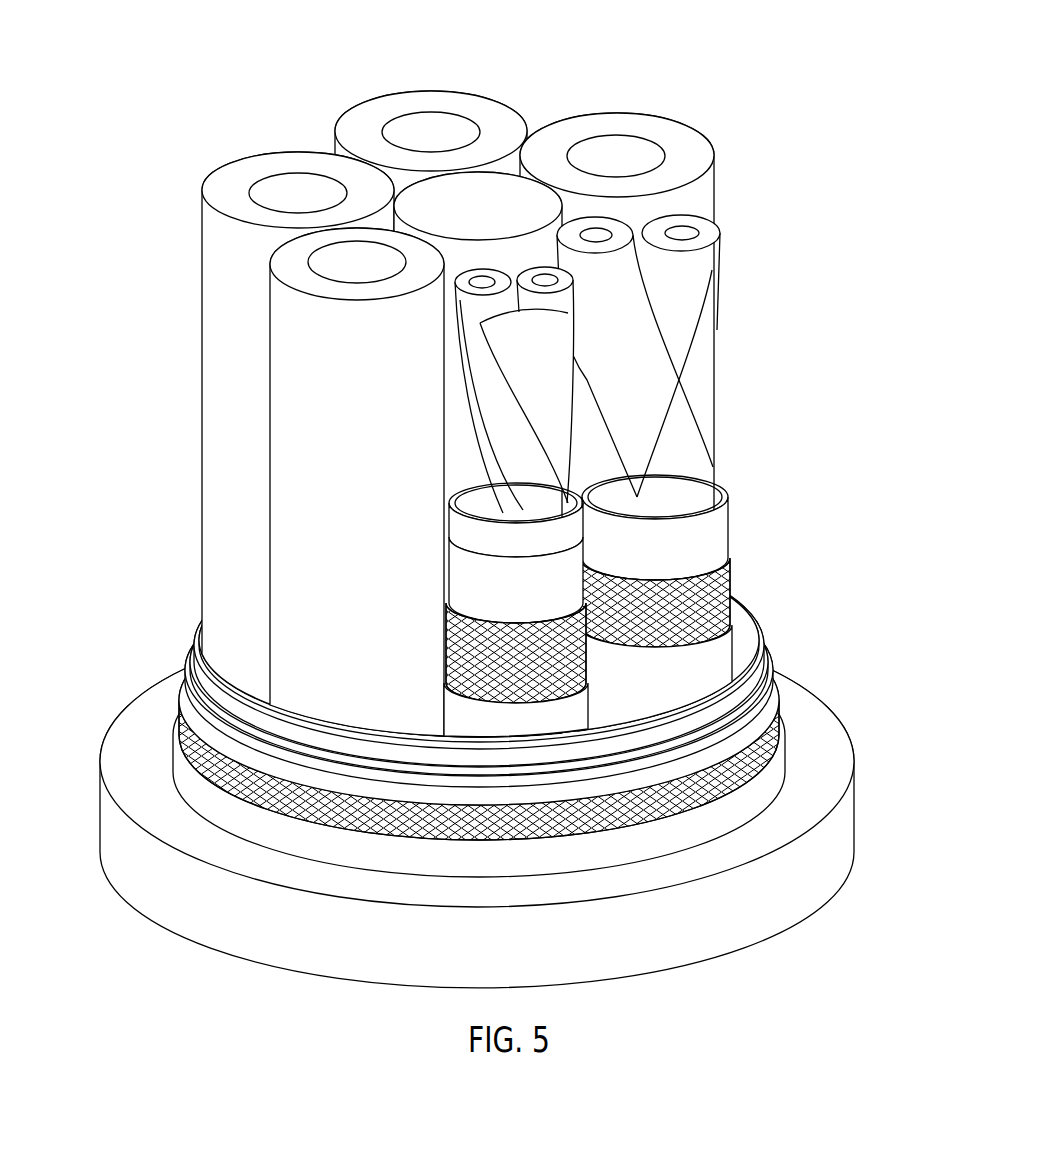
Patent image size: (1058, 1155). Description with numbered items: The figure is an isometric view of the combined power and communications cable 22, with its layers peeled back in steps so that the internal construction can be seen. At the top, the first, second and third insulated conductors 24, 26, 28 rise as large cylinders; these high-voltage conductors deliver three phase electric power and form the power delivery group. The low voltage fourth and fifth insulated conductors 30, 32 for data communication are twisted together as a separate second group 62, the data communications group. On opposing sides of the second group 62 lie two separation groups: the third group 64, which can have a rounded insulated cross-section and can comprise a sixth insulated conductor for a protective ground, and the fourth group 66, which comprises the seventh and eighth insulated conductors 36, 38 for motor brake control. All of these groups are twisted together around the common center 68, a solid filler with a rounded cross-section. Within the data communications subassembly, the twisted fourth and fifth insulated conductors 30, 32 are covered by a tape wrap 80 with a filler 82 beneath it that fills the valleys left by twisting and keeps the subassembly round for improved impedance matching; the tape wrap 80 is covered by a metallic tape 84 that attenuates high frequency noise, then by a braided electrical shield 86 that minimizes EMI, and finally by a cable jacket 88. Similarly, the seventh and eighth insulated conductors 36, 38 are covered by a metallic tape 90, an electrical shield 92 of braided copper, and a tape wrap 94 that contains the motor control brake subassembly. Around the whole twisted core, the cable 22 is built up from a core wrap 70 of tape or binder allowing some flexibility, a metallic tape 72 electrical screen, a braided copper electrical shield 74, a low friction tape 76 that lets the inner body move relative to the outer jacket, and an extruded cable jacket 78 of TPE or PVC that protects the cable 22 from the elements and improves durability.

The cable 22 is at (478, 497).
The first insulated conductor 24 is at (297, 192).
The second insulated conductor 26 is at (432, 130).
The third insulated conductor 28 is at (617, 152).
The fourth insulated conductor 30 is at (478, 284).
The fifth insulated conductor 32 is at (558, 292).
The seventh insulated conductor 36 is at (594, 236).
The eighth insulated conductor 38 is at (676, 234).
The second group 62 is at (467, 735).
The third group 64 is at (303, 319).
The fourth group 66 is at (742, 680).
The common center 68 is at (463, 197).
The core wrap 70 is at (740, 712).
The metallic tape 72 is at (770, 740).
The electrical shield 74 is at (780, 737).
The low friction tape 76 is at (757, 778).
The cable jacket 78 is at (823, 842).
The tape wrap 80 is at (462, 530).
The filler 82 is at (501, 390).
The metallic tape 84 is at (460, 578).
The electrical shield 86 is at (462, 653).
The cable jacket 88 is at (458, 717).
The metallic tape 90 is at (710, 525).
The electrical shield 92 is at (732, 565).
The tape wrap 94 is at (715, 673).